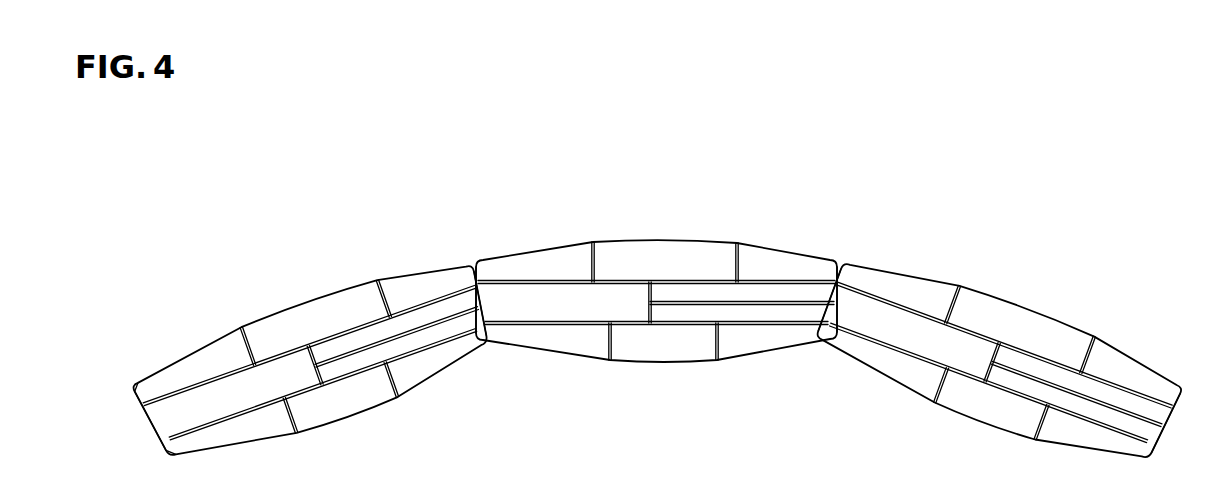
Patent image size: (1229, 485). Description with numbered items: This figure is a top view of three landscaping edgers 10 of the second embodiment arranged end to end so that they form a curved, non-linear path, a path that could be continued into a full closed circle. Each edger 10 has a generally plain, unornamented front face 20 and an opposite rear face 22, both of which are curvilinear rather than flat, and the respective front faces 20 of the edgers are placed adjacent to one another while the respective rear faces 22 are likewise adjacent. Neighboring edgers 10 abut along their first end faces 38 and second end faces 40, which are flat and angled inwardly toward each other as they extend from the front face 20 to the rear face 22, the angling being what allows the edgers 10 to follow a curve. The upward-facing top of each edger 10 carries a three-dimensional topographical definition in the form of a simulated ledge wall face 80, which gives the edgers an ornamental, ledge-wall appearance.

The landscaping edger 10 is at (664, 327).
The front face 20 is at (993, 295).
The rear face 22 is at (342, 417).
The first end face 38 is at (152, 428).
The second end face 40 is at (483, 308).
The simulated ledge wall face 80 is at (642, 245).